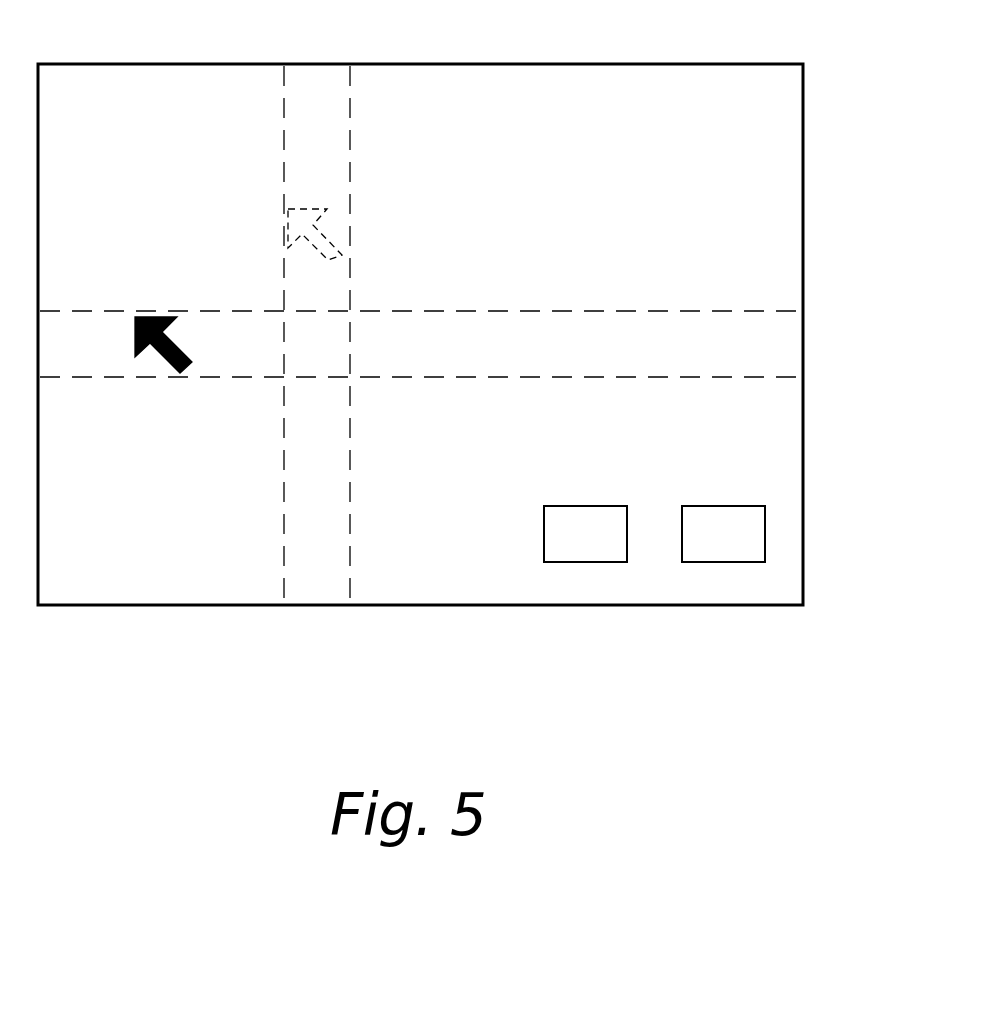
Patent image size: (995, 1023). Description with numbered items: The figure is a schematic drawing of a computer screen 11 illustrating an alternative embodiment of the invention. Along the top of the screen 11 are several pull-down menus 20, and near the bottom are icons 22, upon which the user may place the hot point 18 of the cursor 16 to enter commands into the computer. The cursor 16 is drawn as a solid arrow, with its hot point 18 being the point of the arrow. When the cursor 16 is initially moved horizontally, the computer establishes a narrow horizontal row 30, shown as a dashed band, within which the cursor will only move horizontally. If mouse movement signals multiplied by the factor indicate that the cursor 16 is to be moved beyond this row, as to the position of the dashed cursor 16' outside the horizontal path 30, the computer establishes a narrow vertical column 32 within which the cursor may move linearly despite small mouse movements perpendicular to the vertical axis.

The screen 11 is at (783, 140).
The pull-down menus 20 is at (78, 83).
The vertical column 32 is at (330, 173).
The horizontal row 30 is at (637, 335).
The cursor 16 is at (186, 320).
The hot point 18 is at (136, 320).
The dashed cursor 16' is at (359, 221).
The icons 22 is at (583, 506).